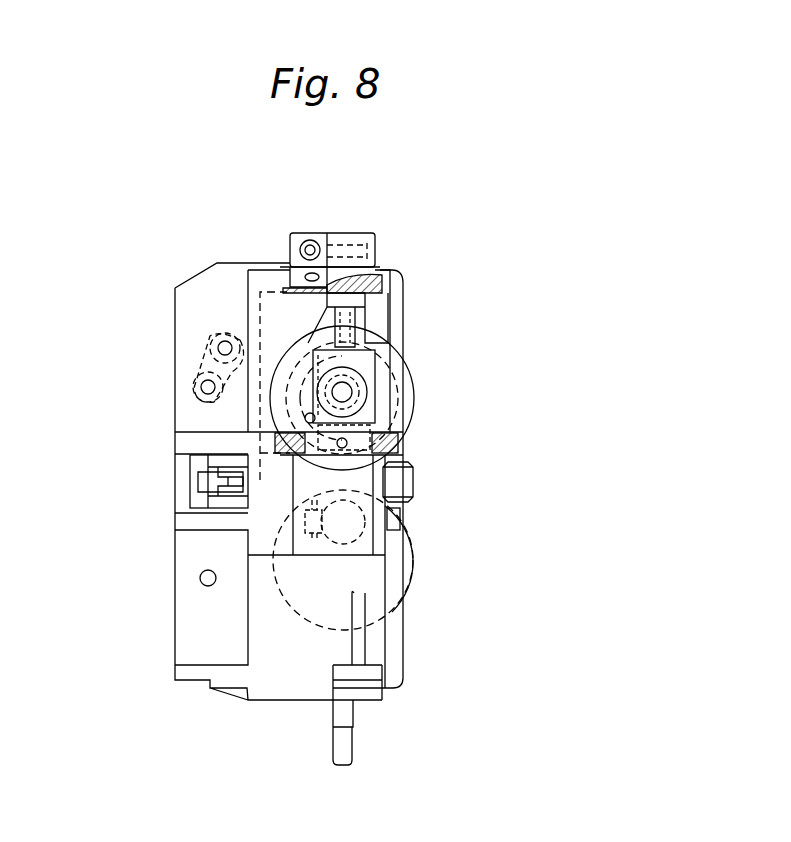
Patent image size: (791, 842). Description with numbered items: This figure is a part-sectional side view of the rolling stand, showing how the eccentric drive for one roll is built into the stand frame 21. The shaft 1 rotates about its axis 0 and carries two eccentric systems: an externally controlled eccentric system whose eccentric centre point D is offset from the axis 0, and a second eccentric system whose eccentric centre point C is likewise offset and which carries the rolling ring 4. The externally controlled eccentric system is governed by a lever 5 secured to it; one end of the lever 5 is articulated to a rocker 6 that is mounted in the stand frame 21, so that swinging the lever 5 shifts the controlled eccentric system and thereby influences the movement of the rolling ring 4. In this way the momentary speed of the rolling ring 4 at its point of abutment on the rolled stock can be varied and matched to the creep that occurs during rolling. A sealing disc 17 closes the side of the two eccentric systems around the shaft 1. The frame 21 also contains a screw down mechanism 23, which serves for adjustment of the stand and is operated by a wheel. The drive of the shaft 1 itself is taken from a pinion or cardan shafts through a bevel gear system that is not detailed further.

The stand frame 21 is at (192, 315).
The screw down mechanism 23 is at (360, 240).
The lever 5 is at (310, 343).
The rocker 6 is at (210, 358).
The shaft 1 is at (352, 388).
The axis 0 is at (356, 392).
The eccentric centre point D is at (356, 396).
The eccentric centre point C is at (356, 402).
The rolling ring 4 is at (402, 487).
The sealing disc 17 is at (403, 503).